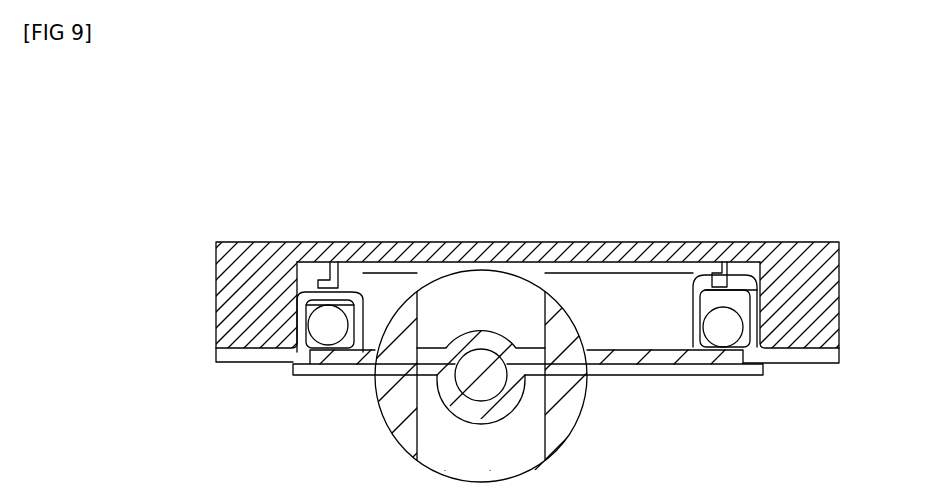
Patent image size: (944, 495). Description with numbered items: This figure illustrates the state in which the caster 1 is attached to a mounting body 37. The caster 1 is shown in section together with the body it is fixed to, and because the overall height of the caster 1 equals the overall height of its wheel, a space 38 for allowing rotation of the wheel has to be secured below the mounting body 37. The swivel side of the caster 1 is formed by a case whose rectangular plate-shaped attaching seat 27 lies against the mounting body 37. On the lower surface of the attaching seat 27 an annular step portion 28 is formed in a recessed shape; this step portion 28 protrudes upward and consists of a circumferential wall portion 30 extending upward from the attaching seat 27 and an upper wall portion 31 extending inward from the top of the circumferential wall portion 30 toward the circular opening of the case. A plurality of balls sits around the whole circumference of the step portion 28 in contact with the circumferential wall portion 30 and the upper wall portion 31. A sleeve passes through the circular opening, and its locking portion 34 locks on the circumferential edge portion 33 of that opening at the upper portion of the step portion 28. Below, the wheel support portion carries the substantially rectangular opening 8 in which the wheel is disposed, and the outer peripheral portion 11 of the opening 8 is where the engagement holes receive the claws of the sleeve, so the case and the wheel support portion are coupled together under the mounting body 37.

The caster 1 is at (779, 119).
The opening 8 is at (588, 348).
The outer peripheral portion 11 is at (715, 372).
The attaching seat 27 is at (243, 347).
The step portion 28 is at (326, 295).
The circumferential wall portion 30 is at (748, 298).
The upper wall portion 31 is at (298, 315).
The circumferential edge portion 33 is at (721, 270).
The locking portion 34 is at (333, 281).
The mounting body 37 is at (510, 240).
The space 38 is at (655, 326).